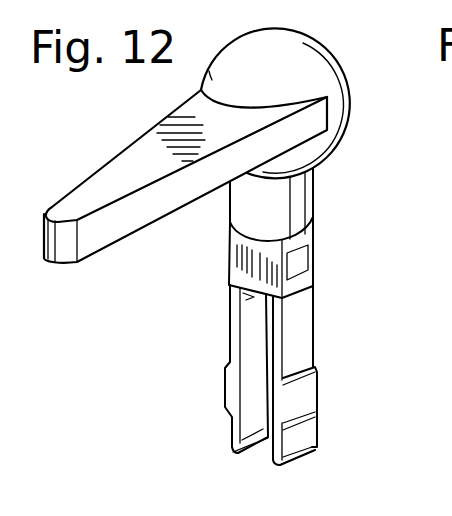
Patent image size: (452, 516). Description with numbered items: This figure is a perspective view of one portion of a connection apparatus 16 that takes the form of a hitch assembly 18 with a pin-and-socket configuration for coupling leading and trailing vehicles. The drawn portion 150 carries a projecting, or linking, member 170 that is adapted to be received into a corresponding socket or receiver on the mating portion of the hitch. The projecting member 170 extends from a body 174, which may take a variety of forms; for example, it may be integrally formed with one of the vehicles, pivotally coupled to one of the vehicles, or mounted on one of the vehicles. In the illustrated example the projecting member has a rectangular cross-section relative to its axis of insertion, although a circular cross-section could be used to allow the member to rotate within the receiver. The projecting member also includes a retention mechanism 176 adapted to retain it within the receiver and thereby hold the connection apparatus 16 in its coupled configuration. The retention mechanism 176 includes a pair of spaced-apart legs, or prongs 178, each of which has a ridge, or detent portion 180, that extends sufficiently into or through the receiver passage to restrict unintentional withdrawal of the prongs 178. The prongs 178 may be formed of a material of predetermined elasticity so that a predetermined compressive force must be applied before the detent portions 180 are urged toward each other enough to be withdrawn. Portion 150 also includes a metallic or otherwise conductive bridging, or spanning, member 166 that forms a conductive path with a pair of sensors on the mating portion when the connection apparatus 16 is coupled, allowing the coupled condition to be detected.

The connection apparatus 16 is at (427, 202).
The hitch assembly 18 is at (359, 242).
The portion 150 is at (218, 274).
The bridging member 166 is at (300, 271).
The projecting member 170 is at (229, 266).
The body 174 is at (165, 118).
The retention mechanism 176 is at (327, 440).
The prongs 178 is at (279, 467).
The detent portion 180 is at (223, 387).